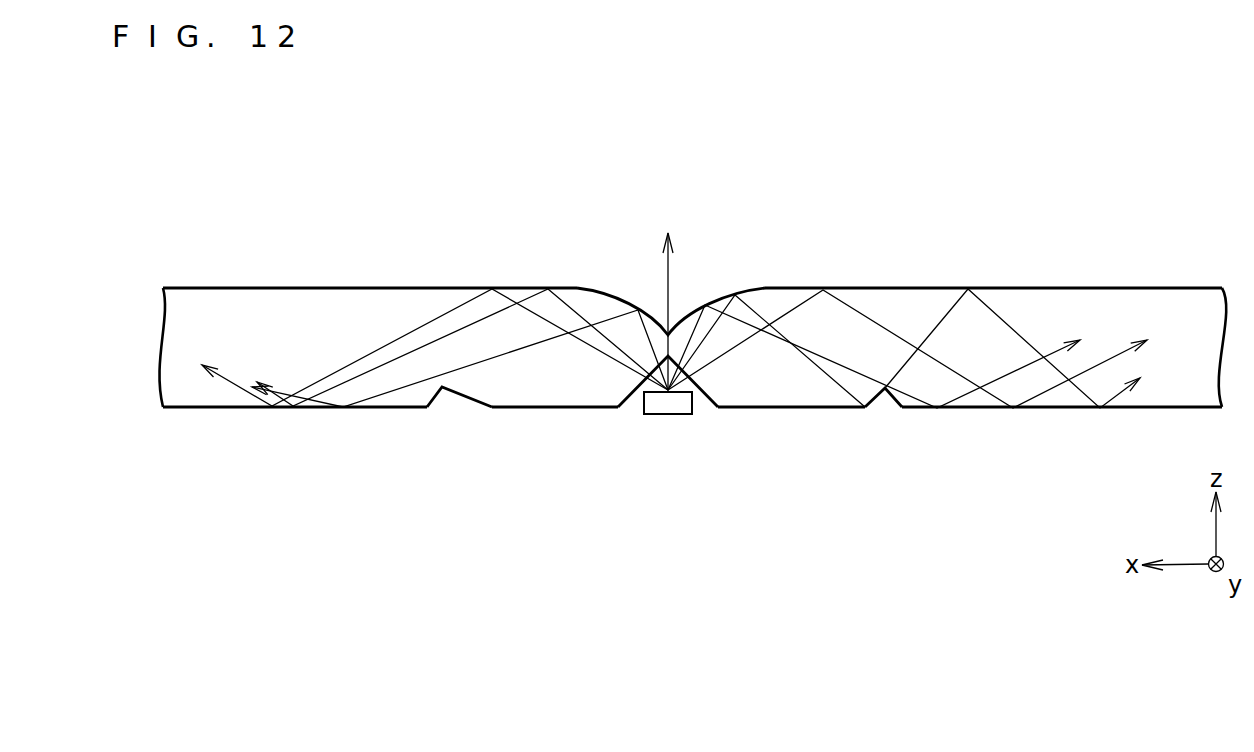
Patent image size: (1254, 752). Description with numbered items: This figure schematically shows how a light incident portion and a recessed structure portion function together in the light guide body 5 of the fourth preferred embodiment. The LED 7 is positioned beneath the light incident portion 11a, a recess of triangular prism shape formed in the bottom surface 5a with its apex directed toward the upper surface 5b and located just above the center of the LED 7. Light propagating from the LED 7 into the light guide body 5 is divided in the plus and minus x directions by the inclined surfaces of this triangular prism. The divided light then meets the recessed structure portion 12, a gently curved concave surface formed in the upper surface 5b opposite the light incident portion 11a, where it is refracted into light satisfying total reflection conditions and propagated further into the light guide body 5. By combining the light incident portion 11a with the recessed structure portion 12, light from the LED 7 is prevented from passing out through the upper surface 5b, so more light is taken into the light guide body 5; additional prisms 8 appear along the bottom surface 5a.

The light guide body 5 is at (692, 332).
The bottom surface 5a is at (200, 409).
The upper surface 5b is at (318, 288).
The LED 7 is at (668, 414).
The prism (reflecting notch) 8 is at (467, 399).
The light incident portion 11a is at (706, 401).
The recessed structure portion 12 is at (678, 306).